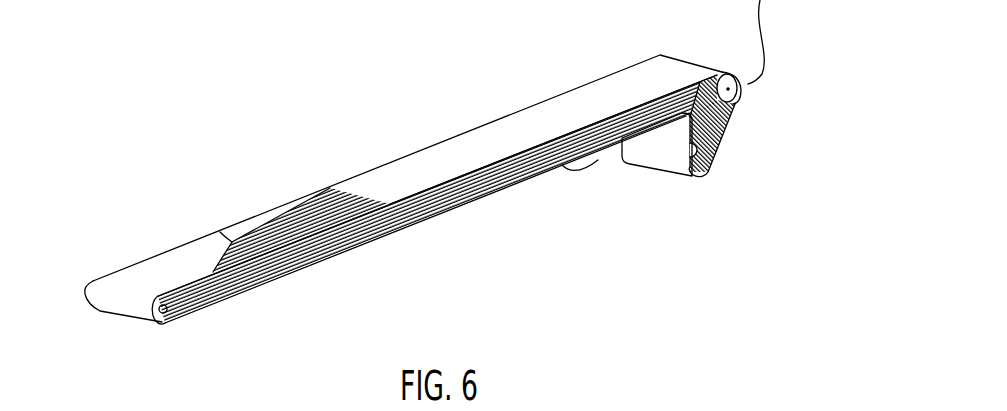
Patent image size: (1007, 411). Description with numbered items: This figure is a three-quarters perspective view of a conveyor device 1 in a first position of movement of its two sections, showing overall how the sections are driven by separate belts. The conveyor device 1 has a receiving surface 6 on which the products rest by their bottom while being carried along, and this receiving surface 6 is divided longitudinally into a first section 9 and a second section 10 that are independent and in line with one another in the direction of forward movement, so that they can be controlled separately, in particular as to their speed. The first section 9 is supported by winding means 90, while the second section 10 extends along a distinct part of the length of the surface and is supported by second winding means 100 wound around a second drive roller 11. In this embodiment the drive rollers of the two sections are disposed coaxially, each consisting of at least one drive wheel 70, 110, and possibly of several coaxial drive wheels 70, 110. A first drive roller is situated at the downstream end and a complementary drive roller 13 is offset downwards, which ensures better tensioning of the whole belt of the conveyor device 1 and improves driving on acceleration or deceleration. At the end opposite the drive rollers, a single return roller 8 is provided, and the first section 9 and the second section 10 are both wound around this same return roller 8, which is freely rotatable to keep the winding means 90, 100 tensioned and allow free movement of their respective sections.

The conveyor device 1 is at (360, 150).
The receiving surface 6 is at (188, 240).
The return roller 8 is at (168, 308).
The first section 9 is at (463, 153).
The second section 10 is at (140, 283).
The second drive roller 11 is at (727, 104).
The complementary drive roller 13 is at (710, 164).
The drive wheel 70 is at (750, 81).
The winding means 90 is at (376, 222).
The second winding means 100 is at (249, 218).
The drive wheel 110 is at (739, 97).